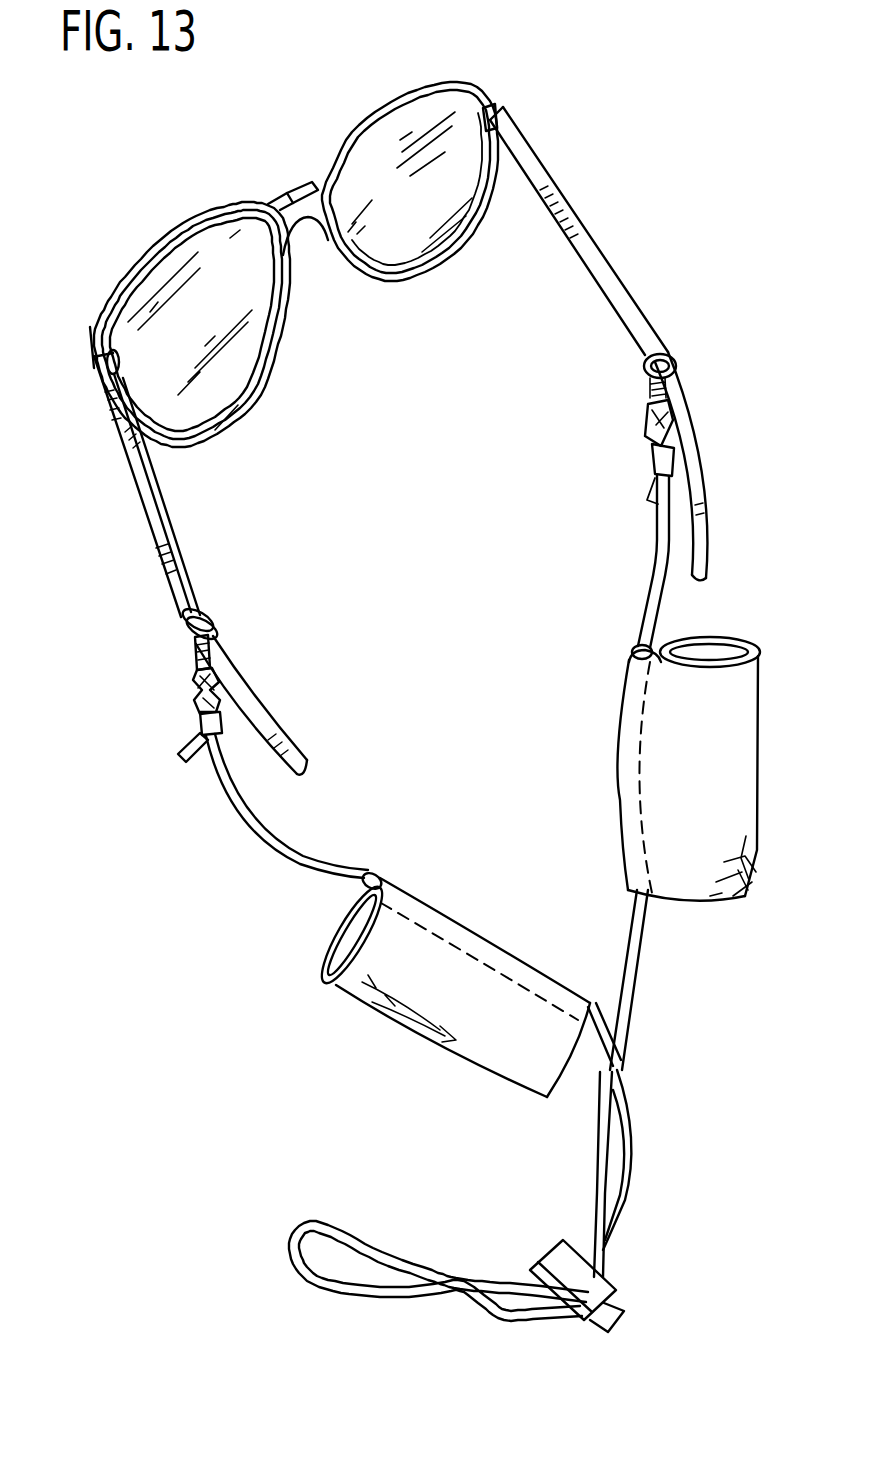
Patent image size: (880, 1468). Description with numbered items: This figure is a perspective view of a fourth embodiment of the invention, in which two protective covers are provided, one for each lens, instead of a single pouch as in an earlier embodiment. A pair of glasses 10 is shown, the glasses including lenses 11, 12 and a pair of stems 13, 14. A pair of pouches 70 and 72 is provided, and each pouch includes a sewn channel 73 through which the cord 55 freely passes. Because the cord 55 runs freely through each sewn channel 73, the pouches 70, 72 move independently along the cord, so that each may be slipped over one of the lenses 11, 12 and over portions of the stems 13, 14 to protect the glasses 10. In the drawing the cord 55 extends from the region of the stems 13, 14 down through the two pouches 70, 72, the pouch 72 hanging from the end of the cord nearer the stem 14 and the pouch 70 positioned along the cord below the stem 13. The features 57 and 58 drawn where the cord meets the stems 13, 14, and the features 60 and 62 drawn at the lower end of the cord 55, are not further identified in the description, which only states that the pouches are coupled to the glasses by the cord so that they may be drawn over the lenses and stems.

The pair of glasses 10 is at (292, 192).
The lens 11 is at (182, 292).
The lens 12 is at (380, 148).
The stem 13 is at (152, 546).
The stem 14 is at (568, 206).
The cord 55 is at (660, 557).
The left temple attachment knot 57 is at (190, 640).
The right temple attachment knot 58 is at (663, 350).
The cord loop 60 is at (380, 1254).
The clasp 62 is at (553, 1262).
The pouch 70 is at (420, 946).
The pouch 72 is at (678, 752).
The sewn channel 73 is at (636, 650).